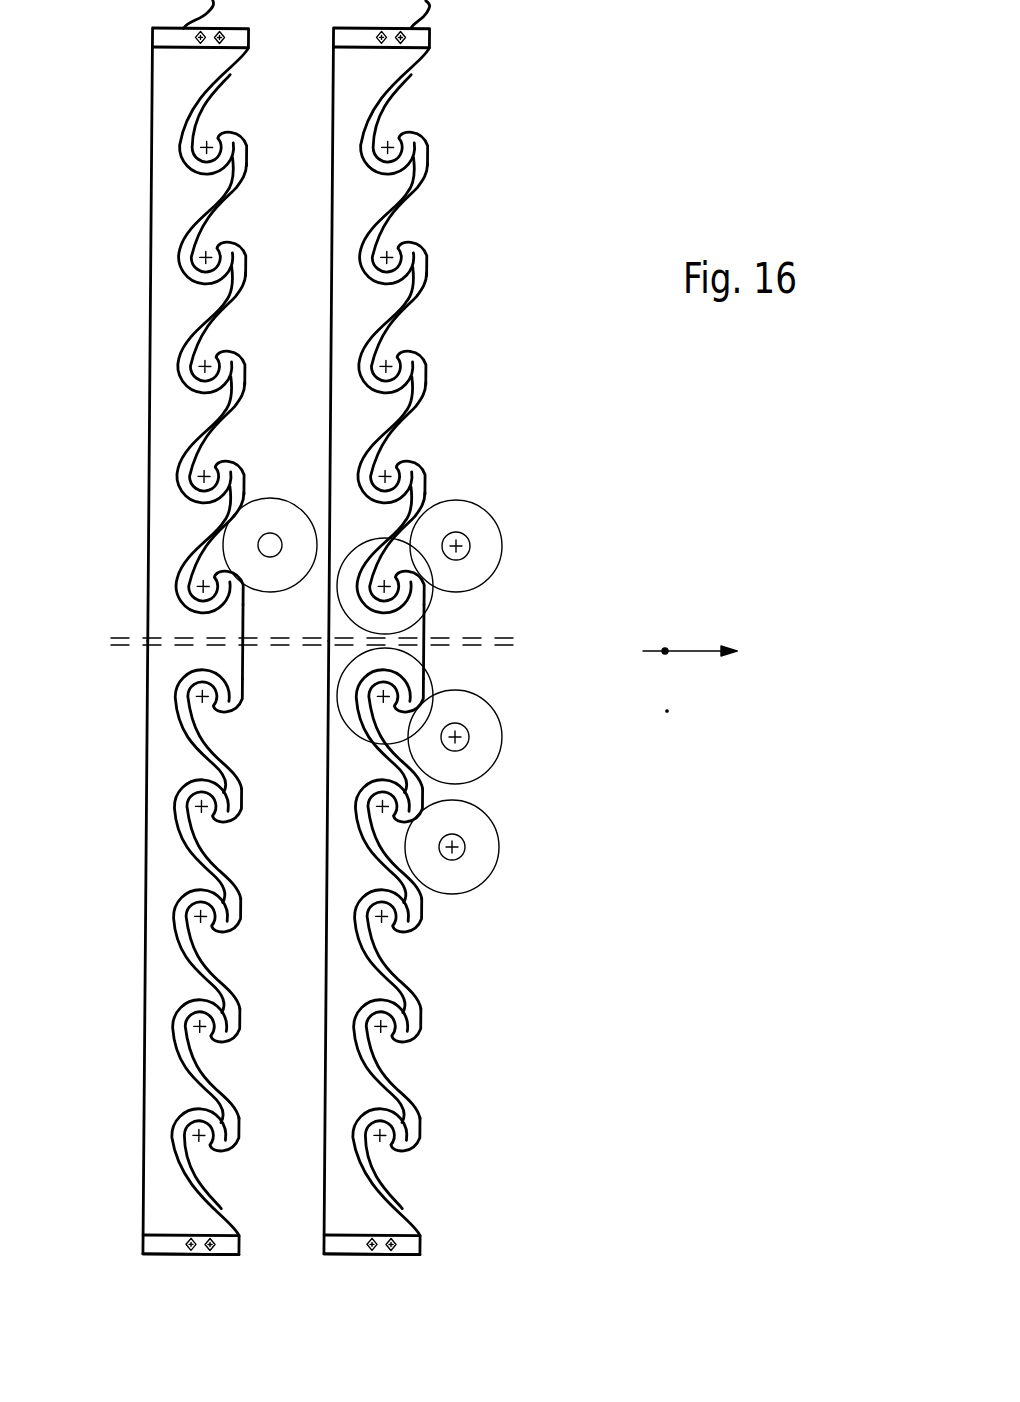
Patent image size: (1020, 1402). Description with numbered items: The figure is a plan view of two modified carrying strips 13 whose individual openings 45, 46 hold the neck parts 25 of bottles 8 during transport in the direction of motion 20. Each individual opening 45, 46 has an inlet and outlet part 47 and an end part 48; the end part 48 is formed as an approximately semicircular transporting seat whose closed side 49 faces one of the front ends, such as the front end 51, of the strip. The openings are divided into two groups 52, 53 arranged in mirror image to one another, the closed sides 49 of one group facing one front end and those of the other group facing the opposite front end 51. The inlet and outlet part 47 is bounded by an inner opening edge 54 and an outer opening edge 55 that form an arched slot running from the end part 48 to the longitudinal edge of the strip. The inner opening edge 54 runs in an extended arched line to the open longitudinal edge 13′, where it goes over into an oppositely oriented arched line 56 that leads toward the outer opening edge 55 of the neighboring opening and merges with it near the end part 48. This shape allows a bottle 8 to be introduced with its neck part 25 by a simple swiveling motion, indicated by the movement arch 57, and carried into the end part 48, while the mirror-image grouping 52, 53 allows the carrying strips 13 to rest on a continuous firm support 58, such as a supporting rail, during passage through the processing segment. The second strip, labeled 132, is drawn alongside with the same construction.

The bottle 8 is at (284, 500).
The carrying strip 13 is at (167, 942).
The open longitudinal edge 13′ is at (244, 608).
The second holding strip 132 is at (347, 972).
The direction of motion 20 is at (665, 650).
The neck part 25 is at (480, 848).
The individual opening 45 is at (284, 468).
The individual opening 46 is at (322, 841).
The inlet and outlet part 47 is at (294, 353).
The end part 48 is at (207, 393).
The closed side 49 is at (203, 496).
The front end 51 is at (167, 1255).
The group 52 is at (262, 478).
The group 53 is at (216, 857).
The inner opening edge 54 is at (339, 165).
The outer opening edge 55 is at (228, 131).
The oppositely oriented arched line 56 is at (240, 252).
The movement arch 57 is at (456, 546).
The support 58 is at (514, 641).